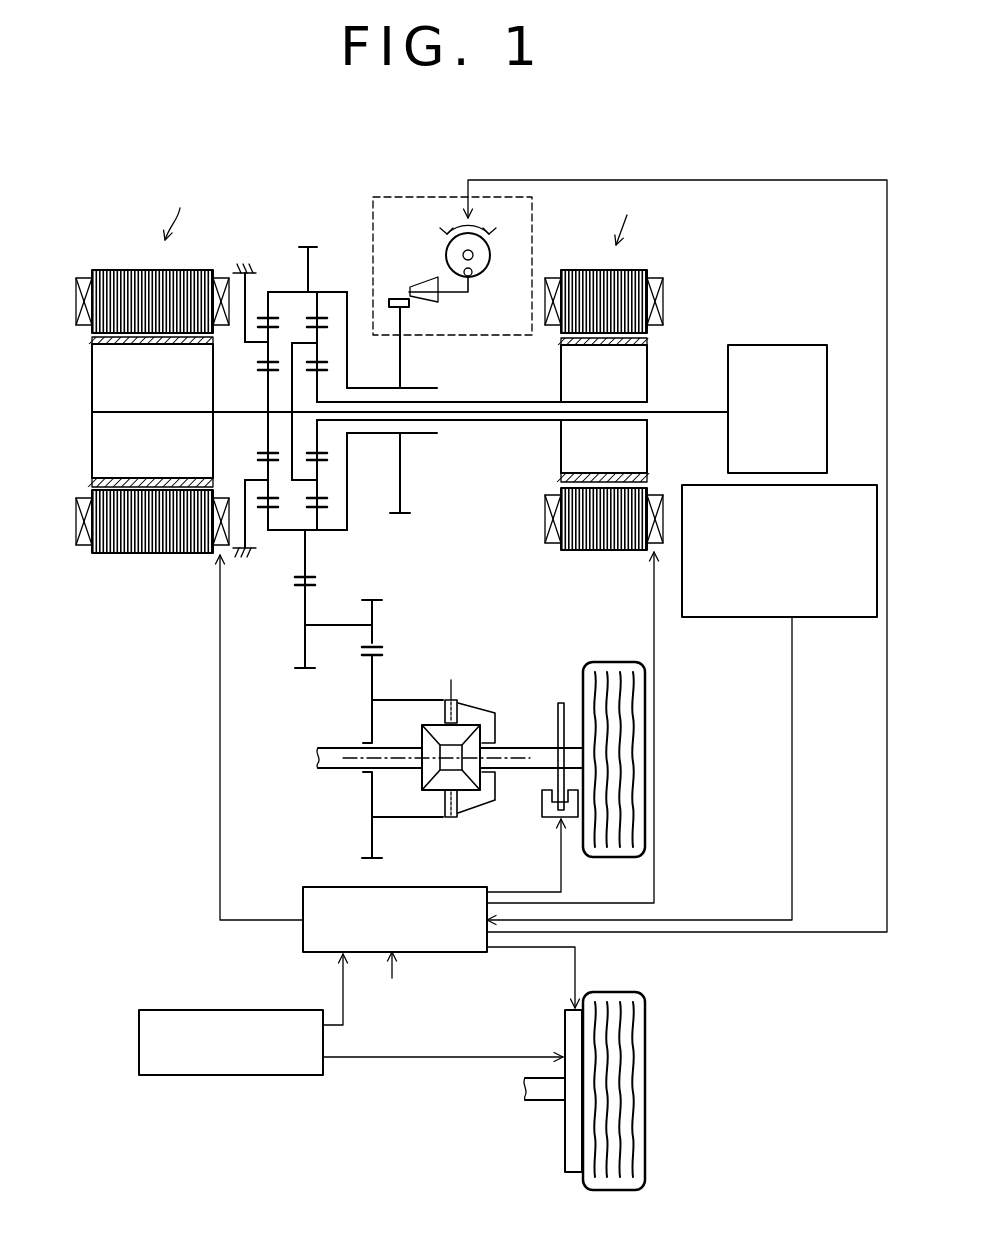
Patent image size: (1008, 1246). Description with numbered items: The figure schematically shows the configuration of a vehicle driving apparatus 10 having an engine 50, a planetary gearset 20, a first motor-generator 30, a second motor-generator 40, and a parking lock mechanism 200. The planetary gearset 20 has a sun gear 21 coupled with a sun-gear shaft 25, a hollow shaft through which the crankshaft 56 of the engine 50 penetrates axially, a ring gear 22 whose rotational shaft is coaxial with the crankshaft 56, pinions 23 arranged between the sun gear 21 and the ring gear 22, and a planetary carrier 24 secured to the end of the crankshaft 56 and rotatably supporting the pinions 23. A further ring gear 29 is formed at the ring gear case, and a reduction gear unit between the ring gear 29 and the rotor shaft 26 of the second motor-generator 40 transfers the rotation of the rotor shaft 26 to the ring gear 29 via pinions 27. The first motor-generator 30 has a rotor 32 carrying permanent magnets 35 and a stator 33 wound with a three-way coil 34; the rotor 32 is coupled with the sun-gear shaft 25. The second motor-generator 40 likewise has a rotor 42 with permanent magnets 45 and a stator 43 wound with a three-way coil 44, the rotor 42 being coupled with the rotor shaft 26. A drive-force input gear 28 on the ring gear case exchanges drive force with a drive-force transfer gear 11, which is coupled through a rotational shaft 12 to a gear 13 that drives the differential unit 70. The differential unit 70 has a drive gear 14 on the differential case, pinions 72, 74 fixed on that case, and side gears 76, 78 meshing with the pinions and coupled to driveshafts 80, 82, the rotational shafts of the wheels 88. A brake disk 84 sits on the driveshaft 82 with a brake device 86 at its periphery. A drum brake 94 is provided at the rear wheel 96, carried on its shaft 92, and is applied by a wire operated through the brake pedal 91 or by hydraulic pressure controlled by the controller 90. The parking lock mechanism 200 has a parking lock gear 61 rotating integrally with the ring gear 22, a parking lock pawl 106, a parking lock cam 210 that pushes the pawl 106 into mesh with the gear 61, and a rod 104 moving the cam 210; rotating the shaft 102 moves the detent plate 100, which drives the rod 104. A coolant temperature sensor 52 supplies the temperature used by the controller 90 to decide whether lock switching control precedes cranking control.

The vehicle driving apparatus 10 is at (125, 159).
The drive-force transfer gear 11 is at (296, 645).
The rotational shaft 12 is at (337, 626).
The gear 13 is at (375, 615).
The drive gear 14 is at (375, 680).
The planetary gearset 20 is at (323, 220).
The sun gear 21 is at (318, 382).
The ring gear 22 is at (310, 300).
The pinions 23 is at (298, 340).
The planetary carrier 24 is at (322, 322).
The sun-gear shaft 25 is at (470, 402).
The rotor shaft 26 is at (238, 412).
The pinions 27 is at (266, 316).
The drive-force input gear 28 is at (303, 560).
The ring gear 29 is at (265, 318).
The first motor generator MG1 30 is at (622, 366).
The rotor 32 is at (648, 378).
The stator 33 is at (578, 270).
The three-way coil 34 is at (660, 278).
The permanent magnets 35 is at (648, 342).
The second motor generator MG2 40 is at (128, 362).
The rotor 42 is at (92, 385).
The stator 43 is at (124, 270).
The three-way coil 44 is at (82, 278).
The permanent magnets 45 is at (92, 341).
The engine 50 is at (778, 345).
The coolant temperature sensor 52 is at (765, 617).
The crankshaft 56 is at (672, 414).
The parking lock gear 61 is at (402, 360).
The differential unit 70 is at (481, 823).
The pinion 72 is at (462, 710).
The pinion 74 is at (443, 792).
The side gear 76 is at (420, 775).
The side gear 78 is at (496, 778).
The driveshaft 80 is at (340, 748).
The driveshaft 82 is at (528, 748).
The brake disk 84 is at (560, 703).
The brake device 86 is at (542, 813).
The wheels 88 is at (615, 662).
The controller 90 is at (338, 887).
The brake pedal 91 is at (228, 1010).
The axle 92 is at (540, 1100).
The drum brake 94 is at (565, 1020).
The rear wheel 96 is at (616, 992).
The detent plate 100 is at (472, 278).
The shaft 102 is at (474, 255).
The rod 104 is at (436, 293).
The parking lock pawl 106 is at (392, 298).
The parking lock mechanism 200 is at (444, 197).
The parking lock cam 210 is at (416, 287).